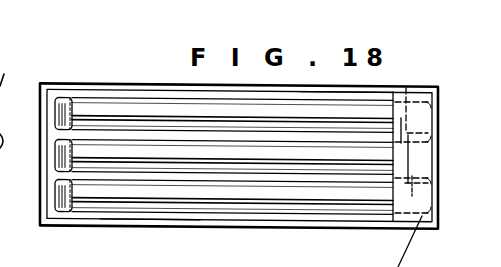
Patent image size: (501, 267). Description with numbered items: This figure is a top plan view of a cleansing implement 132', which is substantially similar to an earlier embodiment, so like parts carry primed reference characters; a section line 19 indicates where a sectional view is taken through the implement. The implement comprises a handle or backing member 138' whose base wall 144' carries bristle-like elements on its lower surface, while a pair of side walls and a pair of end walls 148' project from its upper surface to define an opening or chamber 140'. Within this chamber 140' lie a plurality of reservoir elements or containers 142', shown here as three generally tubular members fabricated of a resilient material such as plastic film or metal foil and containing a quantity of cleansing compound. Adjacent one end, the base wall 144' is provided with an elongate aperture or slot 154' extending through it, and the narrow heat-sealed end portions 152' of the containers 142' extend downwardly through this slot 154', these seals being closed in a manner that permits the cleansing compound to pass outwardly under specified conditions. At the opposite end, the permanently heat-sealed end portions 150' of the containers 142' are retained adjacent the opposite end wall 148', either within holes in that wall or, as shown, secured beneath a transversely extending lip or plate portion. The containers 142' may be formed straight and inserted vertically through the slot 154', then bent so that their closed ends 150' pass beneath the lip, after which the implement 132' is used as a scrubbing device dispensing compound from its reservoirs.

The section line 19- 19 is at (56, 247).
The cleansing implement 132' is at (249, 134).
The handle or backing member 138' is at (388, 116).
The opening or chamber 140' is at (347, 77).
The reservoir elements or containers 142' is at (198, 154).
The base wall 144' is at (150, 238).
The end wall 148' is at (227, 178).
The permanently sealed end portions 150' is at (413, 71).
The sealed end portions 152' is at (38, 113).
The elongate aperture or slot 154' is at (232, 76).